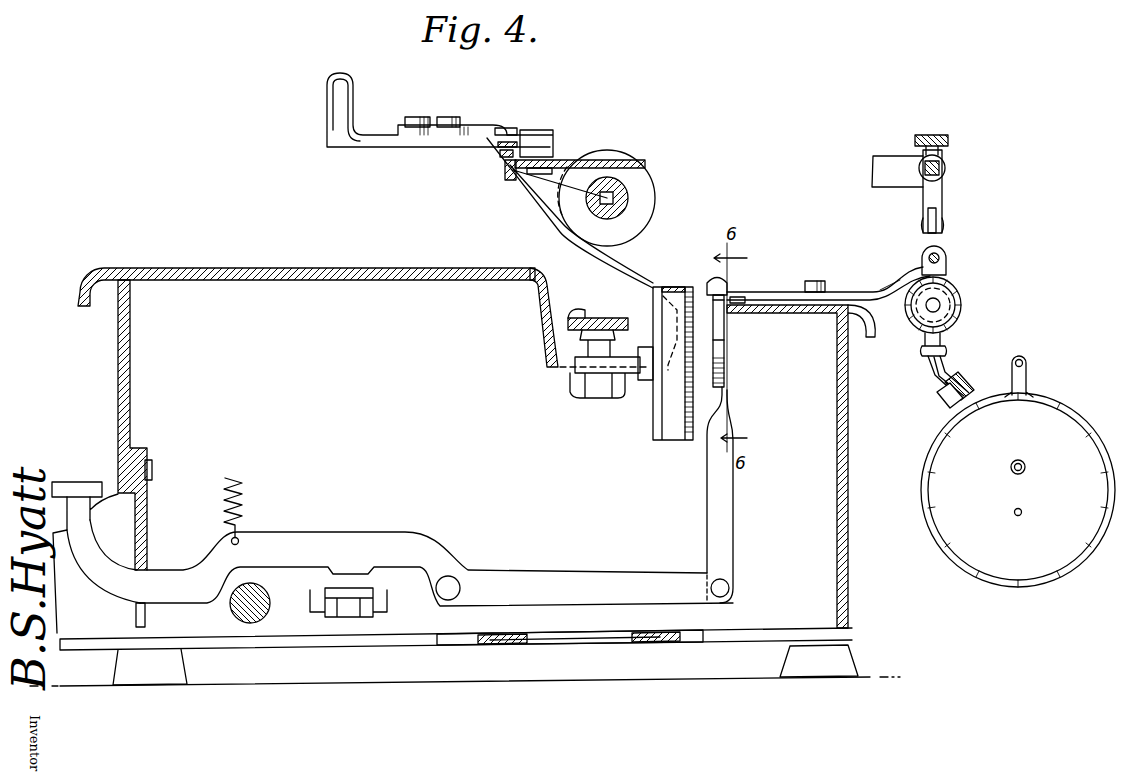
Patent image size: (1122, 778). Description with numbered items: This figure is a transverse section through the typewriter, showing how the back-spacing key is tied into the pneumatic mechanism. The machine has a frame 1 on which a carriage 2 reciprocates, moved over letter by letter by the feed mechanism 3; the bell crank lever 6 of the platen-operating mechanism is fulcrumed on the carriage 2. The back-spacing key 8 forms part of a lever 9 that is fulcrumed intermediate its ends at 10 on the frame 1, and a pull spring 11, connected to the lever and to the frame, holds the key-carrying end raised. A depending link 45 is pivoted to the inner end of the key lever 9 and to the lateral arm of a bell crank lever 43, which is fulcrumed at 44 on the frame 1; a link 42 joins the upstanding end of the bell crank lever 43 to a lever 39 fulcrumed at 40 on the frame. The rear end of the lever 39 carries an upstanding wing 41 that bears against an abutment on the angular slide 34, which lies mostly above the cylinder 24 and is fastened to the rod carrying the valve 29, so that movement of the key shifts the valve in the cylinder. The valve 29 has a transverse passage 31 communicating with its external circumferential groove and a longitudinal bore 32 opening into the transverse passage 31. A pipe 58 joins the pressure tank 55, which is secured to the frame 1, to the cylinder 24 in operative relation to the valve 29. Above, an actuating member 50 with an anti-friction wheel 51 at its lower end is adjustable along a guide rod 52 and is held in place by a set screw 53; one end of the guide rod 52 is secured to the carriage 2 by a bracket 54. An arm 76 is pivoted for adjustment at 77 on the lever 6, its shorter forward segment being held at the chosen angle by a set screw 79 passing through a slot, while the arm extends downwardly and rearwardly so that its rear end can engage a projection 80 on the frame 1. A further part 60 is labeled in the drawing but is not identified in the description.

The frame 1 is at (368, 268).
The carriage 2 is at (652, 158).
The feed mechanism 3 is at (674, 440).
The bell crank lever 6 is at (341, 72).
The back-spacing key 8 is at (80, 482).
The lever 9 is at (375, 540).
The fulcrum 10 is at (456, 580).
The pull spring 11 is at (243, 481).
The cylinder 24 is at (962, 301).
The valve 29 is at (958, 290).
The transverse passage 31 is at (913, 332).
The longitudinal bore 32 is at (940, 306).
The angular slide 34 is at (947, 257).
The lever 39 is at (773, 292).
The fulcrum 40 is at (822, 283).
The upstanding wing 41 is at (920, 262).
The link 42 is at (731, 312).
The bell crank lever 43 is at (738, 348).
The fulcrum 44 is at (735, 368).
The depending link 45 is at (727, 514).
The actuating member 50 is at (942, 197).
The anti-friction wheel 51 is at (926, 235).
The guide rod 52 is at (945, 164).
The set screw 53 is at (940, 134).
The bracket 54 is at (872, 156).
The pressure tank 55 is at (1006, 588).
The pipe 58 is at (950, 364).
The eye 60 is at (1028, 367).
The arm 76 is at (612, 268).
The pivot 77 is at (460, 118).
The set screw 79 is at (418, 117).
The projection 80 is at (707, 283).